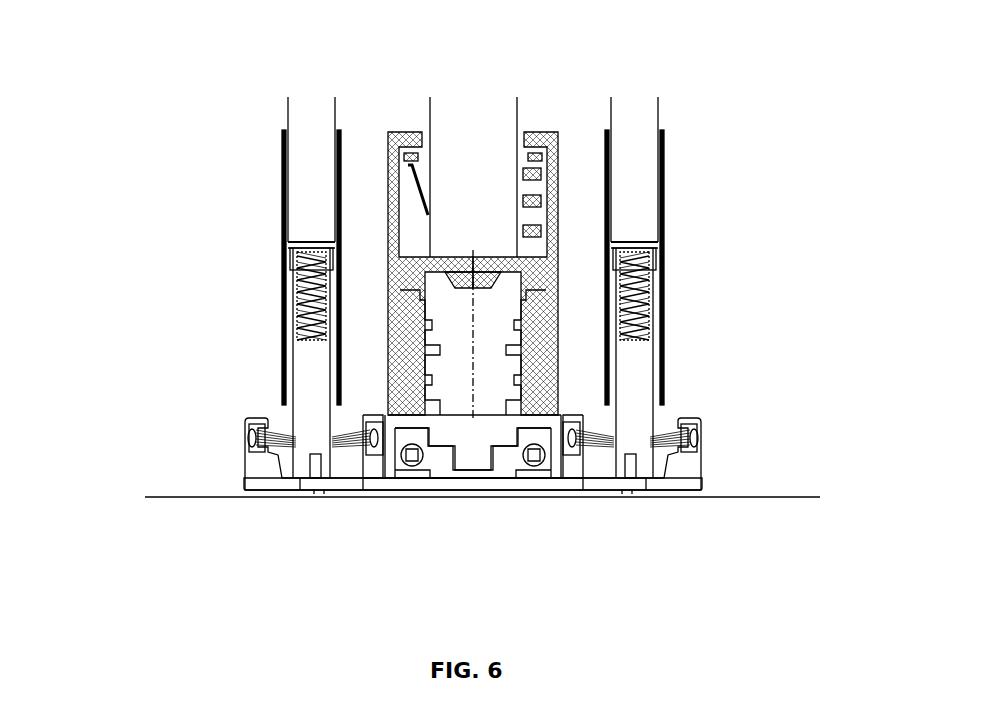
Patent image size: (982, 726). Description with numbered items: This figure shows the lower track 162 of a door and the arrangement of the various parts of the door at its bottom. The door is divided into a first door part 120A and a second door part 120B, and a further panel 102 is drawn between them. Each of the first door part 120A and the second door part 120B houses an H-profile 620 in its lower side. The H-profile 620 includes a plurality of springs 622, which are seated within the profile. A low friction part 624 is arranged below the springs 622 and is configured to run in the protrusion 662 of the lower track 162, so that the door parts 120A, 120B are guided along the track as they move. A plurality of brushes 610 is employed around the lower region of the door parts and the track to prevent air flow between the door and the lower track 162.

The glass panel 102 is at (467, 117).
The first door part 120A is at (287, 120).
The second door part 120B is at (662, 120).
The lower track 162 is at (684, 497).
The brushes 610 is at (289, 470).
The H-profile 620 is at (283, 205).
The springs 622 is at (295, 272).
The low friction part 624 is at (303, 385).
The protrusion 662 is at (323, 470).